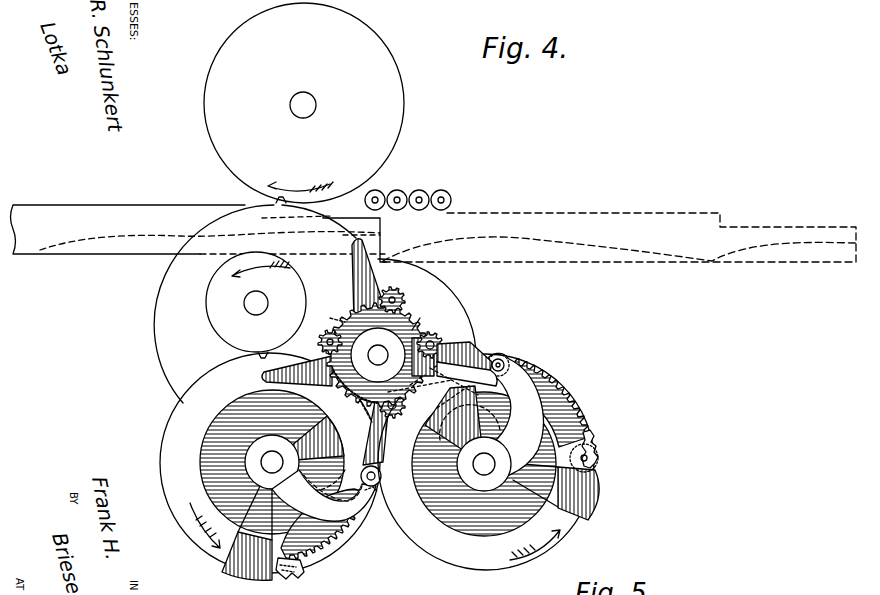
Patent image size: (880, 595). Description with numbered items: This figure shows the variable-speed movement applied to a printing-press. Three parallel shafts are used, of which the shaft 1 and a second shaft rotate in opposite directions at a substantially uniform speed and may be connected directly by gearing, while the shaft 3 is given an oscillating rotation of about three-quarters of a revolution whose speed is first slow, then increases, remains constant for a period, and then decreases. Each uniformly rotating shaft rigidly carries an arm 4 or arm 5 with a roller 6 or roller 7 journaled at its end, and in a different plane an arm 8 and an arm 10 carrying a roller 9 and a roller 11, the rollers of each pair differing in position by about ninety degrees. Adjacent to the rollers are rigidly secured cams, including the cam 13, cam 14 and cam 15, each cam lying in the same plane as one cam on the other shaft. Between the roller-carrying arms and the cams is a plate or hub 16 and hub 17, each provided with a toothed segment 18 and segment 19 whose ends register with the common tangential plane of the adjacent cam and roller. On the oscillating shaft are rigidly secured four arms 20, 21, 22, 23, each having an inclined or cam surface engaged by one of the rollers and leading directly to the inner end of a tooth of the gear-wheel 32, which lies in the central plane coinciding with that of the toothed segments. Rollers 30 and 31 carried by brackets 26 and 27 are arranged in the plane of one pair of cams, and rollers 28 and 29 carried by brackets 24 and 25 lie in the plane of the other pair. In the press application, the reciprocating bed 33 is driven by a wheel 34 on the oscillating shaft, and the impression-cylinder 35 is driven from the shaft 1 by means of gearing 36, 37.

The shaft 1 is at (272, 465).
The shaft 3 is at (378, 355).
The arm 4 is at (338, 503).
The arm 5 is at (510, 415).
The roller 6 is at (376, 479).
The roller 7 is at (501, 358).
The arm 8 is at (594, 440).
The roller 9 is at (596, 460).
The arm 10 is at (296, 570).
The roller 11 is at (288, 574).
The cam 13 is at (582, 514).
The cam 14 is at (385, 440).
The cam 15 is at (230, 566).
The plate or hub 16 is at (486, 462).
The plate or hub 17 is at (236, 400).
The toothed segment 18 is at (573, 406).
The toothed segment 19 is at (345, 537).
The arm 20 is at (467, 364).
The arm 21 is at (362, 409).
The arm 22 is at (264, 374).
The arm 23 is at (352, 277).
The bracket 24 is at (424, 315).
The bracket 25 is at (332, 312).
The bracket 26 is at (382, 393).
The bracket 27 is at (433, 385).
The roller 28 is at (410, 297).
The roller 29 is at (320, 342).
The roller 30 is at (399, 414).
The roller 31 is at (440, 345).
The gear-wheel 32 is at (440, 330).
The reciprocating bed 33 is at (82, 212).
The wheel 34 is at (468, 323).
The impression-cylinder 35 is at (304, 103).
The gearing 36 is at (250, 355).
The gearing 37 is at (262, 210).